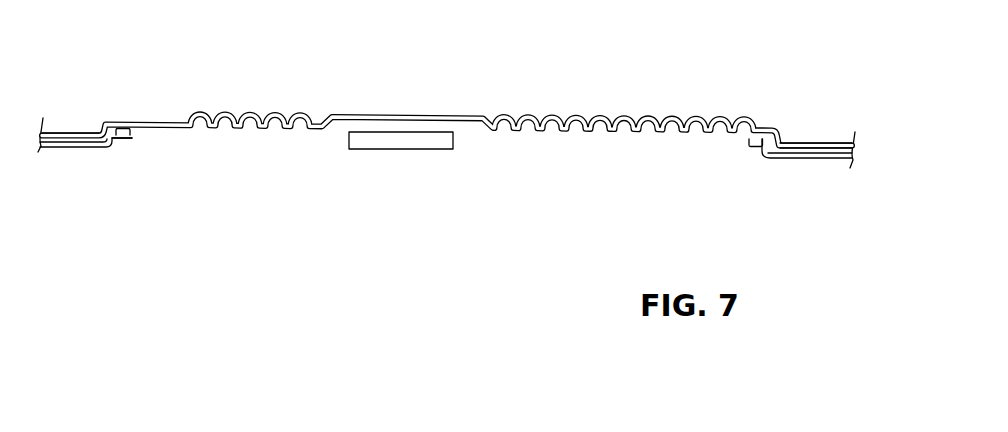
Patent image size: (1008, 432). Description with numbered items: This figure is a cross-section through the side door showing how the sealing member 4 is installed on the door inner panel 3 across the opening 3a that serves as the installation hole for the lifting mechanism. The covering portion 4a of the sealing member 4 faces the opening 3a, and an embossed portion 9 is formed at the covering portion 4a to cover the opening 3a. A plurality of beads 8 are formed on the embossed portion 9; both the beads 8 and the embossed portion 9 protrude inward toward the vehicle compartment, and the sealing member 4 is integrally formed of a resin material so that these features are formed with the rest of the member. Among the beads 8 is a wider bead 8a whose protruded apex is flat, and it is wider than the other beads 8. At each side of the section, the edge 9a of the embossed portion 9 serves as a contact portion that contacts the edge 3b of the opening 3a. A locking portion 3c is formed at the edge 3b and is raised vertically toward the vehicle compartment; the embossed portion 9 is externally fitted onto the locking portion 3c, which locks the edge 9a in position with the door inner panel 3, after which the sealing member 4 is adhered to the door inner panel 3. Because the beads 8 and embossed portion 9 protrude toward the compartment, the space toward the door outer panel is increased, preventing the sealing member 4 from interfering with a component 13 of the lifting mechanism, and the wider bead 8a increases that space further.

The door inner panel 3 is at (65, 148).
The opening 3a is at (132, 140).
The edge of the opening 3b is at (128, 140).
The locking portion 3c is at (118, 150).
The sealing member 4 is at (156, 122).
The covering portion 4a is at (458, 116).
The beads 8 is at (199, 113).
The wider bead 8a is at (366, 115).
The embossed portion 9 is at (788, 130).
The edge of the embossed portion 9a is at (91, 132).
The component of the lifting mechanism 13 is at (436, 150).